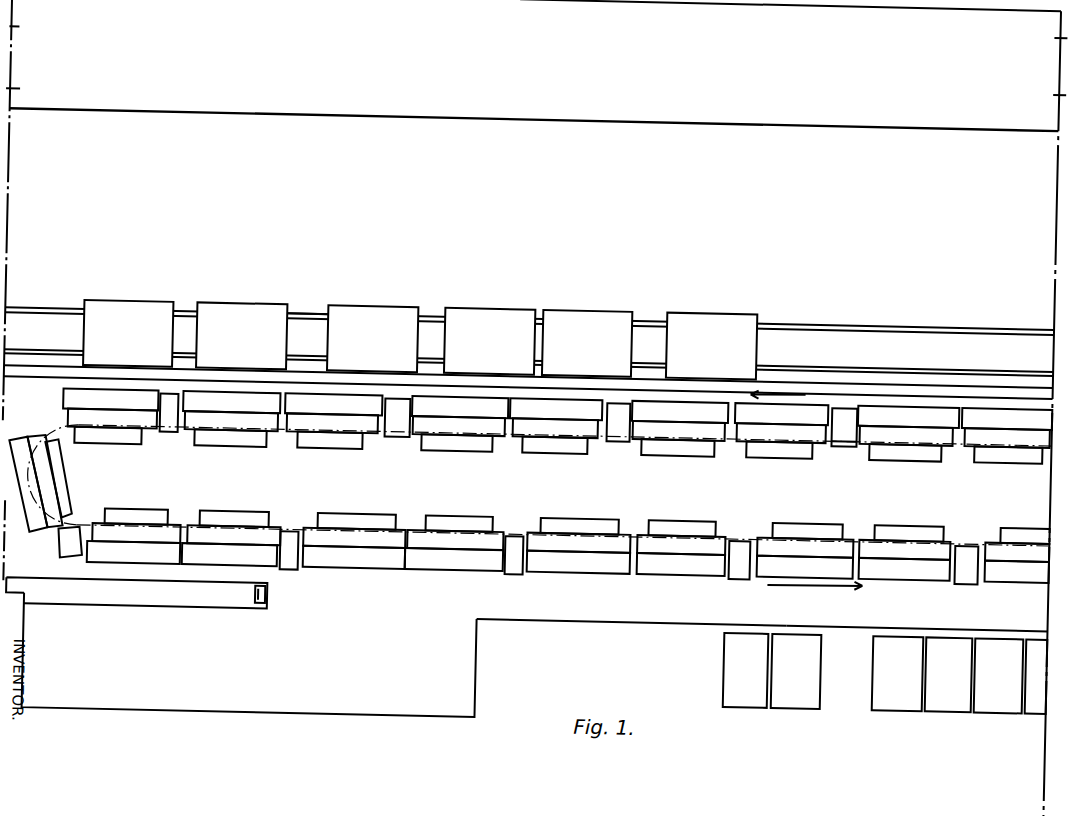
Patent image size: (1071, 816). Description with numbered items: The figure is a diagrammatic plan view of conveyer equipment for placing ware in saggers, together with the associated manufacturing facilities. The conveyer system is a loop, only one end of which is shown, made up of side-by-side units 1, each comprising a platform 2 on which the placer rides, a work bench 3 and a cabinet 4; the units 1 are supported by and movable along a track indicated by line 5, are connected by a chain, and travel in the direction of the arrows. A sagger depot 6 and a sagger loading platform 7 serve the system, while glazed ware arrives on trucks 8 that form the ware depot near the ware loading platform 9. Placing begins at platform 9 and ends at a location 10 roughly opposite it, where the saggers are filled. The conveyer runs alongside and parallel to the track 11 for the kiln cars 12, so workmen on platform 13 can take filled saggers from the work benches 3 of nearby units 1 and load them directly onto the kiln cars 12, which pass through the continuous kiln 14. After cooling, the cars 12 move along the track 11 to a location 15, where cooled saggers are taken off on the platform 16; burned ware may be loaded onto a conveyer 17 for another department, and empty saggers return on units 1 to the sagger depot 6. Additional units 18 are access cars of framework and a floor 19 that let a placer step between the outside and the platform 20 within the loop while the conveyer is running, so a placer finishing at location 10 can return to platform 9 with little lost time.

The unit 1 is at (529, 488).
The platform 2 is at (463, 550).
The work bench 3 is at (508, 526).
The cabinet 4 is at (464, 510).
The track 5 is at (607, 427).
The sagger depot 6 is at (491, 660).
The sagger loading platform 7 is at (546, 601).
The trucks 8 is at (835, 679).
The ware loading platform 9 is at (857, 604).
The location 10 is at (930, 371).
The track 11 is at (807, 310).
The kiln cars 12 is at (157, 300).
The platform 13 is at (701, 370).
The continuous kiln 14 is at (712, 110).
The location 15 is at (311, 295).
The platform 16 is at (165, 377).
The conveyer 17 is at (153, 592).
The additional units 18 is at (850, 422).
The floor or platform 19 is at (859, 387).
The platform 20 is at (1045, 470).